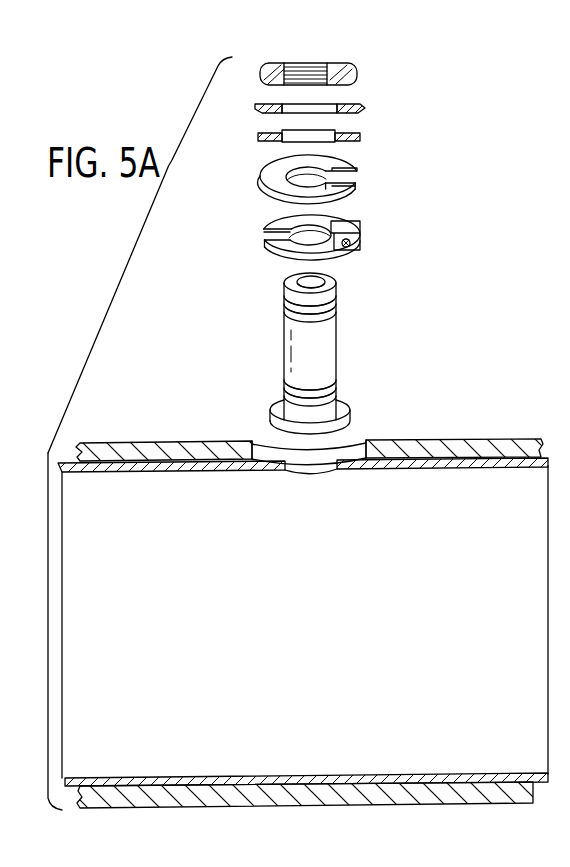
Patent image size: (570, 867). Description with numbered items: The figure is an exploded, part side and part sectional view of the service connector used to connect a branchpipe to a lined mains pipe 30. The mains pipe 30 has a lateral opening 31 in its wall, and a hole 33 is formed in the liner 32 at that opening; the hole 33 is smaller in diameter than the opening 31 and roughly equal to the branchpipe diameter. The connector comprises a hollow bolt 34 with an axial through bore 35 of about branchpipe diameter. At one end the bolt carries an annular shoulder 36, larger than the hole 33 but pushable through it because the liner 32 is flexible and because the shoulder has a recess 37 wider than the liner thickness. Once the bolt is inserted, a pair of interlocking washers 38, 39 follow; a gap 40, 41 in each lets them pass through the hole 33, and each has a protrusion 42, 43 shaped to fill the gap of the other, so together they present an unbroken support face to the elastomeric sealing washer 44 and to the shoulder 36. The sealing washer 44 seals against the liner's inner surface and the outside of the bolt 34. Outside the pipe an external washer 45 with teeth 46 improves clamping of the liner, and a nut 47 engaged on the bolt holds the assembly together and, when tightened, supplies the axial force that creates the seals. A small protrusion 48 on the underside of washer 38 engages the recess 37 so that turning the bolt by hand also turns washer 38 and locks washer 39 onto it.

The mains pipe 30 is at (503, 443).
The lateral opening 31 is at (365, 452).
The liner 32 is at (425, 461).
The hole 33 is at (307, 466).
The hollow bolt 34 is at (342, 348).
The axial through bore 35 is at (291, 287).
The annular shoulder 36 is at (270, 407).
The recess 37 is at (353, 408).
The interlocking washer 38 is at (357, 215).
The interlocking washer 39 is at (358, 156).
The gap 40 is at (268, 238).
The gap 41 is at (358, 184).
The protrusion 42 is at (354, 226).
The protrusion 43 is at (262, 195).
The elastomeric sealing washer 44 is at (360, 138).
The external washer 45 is at (309, 121).
The teeth 46 is at (266, 112).
The nut 47 is at (358, 73).
The small protrusion 48 is at (348, 250).